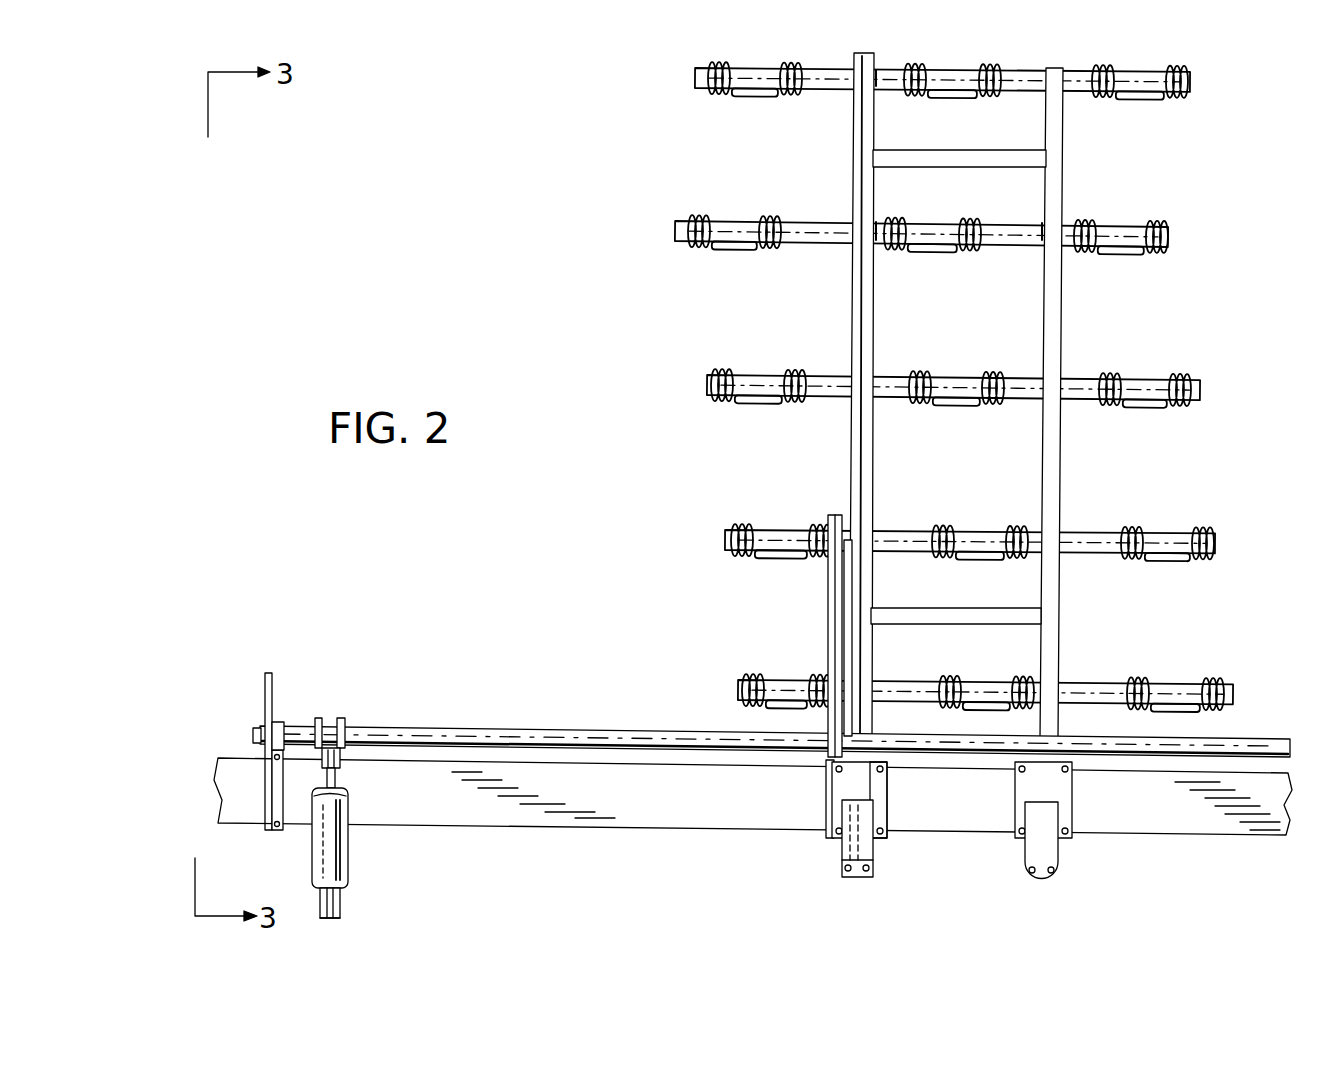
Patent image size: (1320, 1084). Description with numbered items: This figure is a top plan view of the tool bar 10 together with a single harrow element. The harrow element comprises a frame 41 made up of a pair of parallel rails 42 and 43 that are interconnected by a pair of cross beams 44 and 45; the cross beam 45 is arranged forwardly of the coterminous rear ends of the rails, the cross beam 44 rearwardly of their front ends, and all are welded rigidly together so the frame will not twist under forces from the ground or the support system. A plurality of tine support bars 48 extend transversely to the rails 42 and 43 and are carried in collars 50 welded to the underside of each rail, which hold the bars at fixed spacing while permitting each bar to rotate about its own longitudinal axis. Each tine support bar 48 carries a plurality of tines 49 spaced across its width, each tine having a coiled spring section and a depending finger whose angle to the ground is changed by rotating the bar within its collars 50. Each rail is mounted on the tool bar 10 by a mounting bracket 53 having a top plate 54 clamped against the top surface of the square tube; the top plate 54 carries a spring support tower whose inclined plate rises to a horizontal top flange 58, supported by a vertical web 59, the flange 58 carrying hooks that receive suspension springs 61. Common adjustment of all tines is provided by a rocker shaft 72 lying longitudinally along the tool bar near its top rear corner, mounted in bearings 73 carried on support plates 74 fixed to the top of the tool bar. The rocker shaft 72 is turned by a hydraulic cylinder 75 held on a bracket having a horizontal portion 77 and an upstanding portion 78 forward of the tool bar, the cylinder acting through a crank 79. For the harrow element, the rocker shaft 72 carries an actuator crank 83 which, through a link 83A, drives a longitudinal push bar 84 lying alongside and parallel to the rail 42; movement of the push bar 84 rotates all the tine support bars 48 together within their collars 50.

The tool bar 10 is at (620, 822).
The frame 41 is at (962, 395).
The rail 42 is at (878, 438).
The rail 43 is at (1060, 466).
The cross beam 44 is at (942, 615).
The cross beam 45 is at (985, 158).
The tine support bar 48 is at (931, 387).
The tine 49 is at (700, 245).
The collar 50 is at (878, 98).
The mounting bracket 53 is at (830, 845).
The top plate 54 is at (878, 795).
The top flange 58 is at (856, 878).
The vertical web 59 is at (880, 854).
The suspension spring 61 is at (1028, 880).
The rocker shaft 72 is at (580, 735).
The bearing 73 is at (278, 722).
The support plate 74 is at (276, 836).
The hydraulic cylinder 75 is at (338, 838).
The horizontal portion 77 is at (340, 920).
The upstanding portion 78 is at (340, 905).
The crank 79 is at (347, 718).
The actuator crank 83 is at (826, 720).
The link 83A is at (826, 596).
The push bar 84 is at (852, 316).